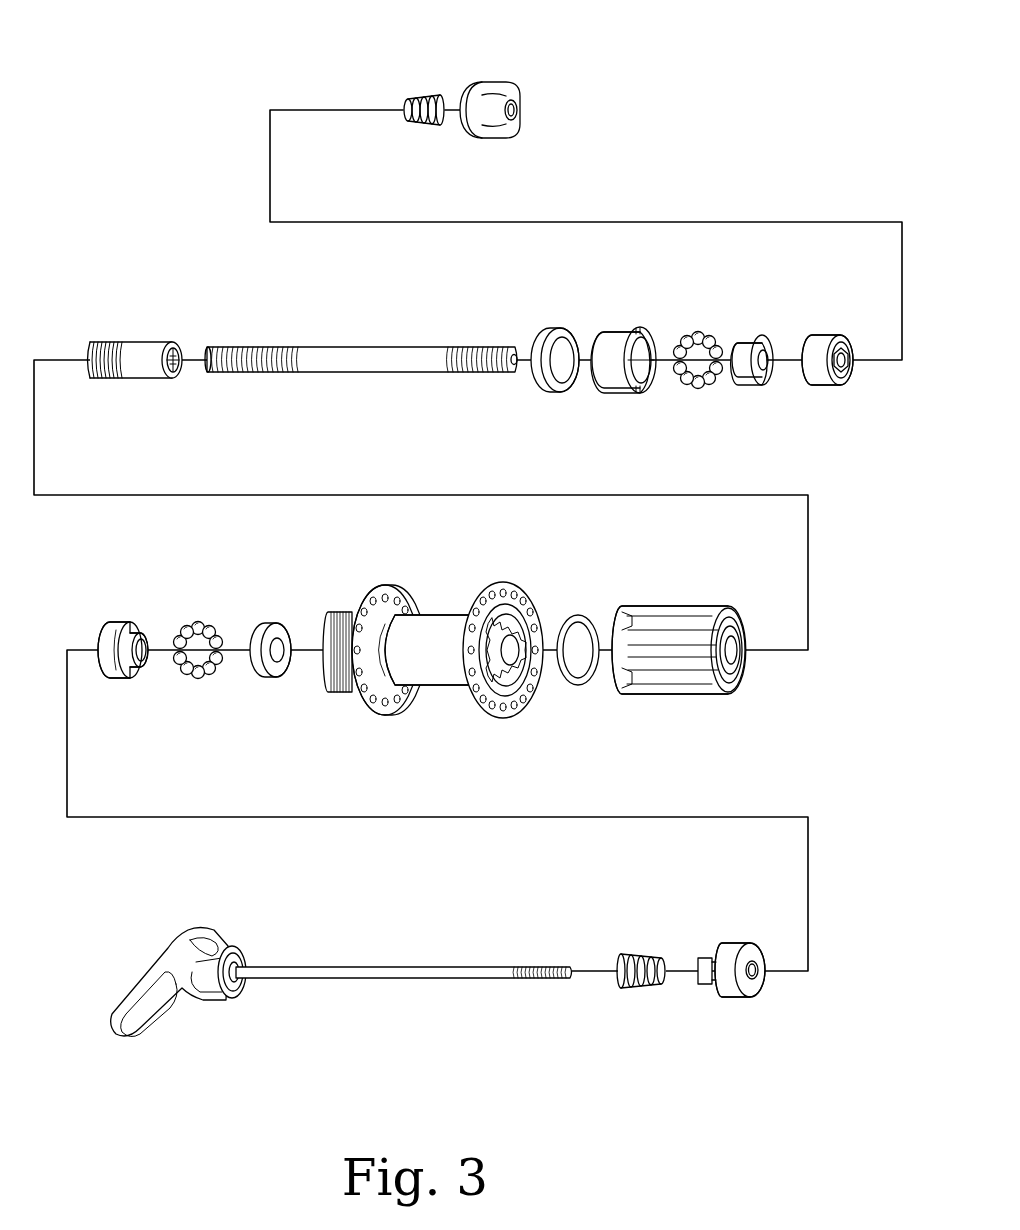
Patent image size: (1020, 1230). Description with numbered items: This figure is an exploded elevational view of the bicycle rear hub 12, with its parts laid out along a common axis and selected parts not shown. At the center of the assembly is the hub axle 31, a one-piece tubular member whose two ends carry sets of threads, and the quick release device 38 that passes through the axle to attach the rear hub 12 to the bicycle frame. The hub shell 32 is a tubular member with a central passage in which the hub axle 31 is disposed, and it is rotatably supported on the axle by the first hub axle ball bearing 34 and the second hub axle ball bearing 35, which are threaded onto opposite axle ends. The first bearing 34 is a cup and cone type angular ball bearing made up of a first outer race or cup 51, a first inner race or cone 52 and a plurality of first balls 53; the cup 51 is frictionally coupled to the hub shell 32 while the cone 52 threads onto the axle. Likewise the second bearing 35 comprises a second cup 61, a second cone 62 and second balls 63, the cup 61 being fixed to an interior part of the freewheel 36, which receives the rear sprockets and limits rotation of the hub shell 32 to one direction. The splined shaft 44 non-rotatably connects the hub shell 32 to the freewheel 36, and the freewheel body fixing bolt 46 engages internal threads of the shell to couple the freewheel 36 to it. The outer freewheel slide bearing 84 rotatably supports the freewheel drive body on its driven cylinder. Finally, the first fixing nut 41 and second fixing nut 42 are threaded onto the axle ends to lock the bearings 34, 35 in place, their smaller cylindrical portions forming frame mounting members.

The rear hub 12 is at (698, 138).
The hub axle 31 is at (383, 336).
The hub shell 32 is at (444, 598).
The first hub axle ball bearing 34 is at (87, 612).
The second hub axle ball bearing 35 is at (782, 310).
The freewheel 36 is at (706, 606).
The quick release device 38 is at (229, 1013).
The first fixing nut 41 is at (738, 993).
The second fixing nut 42 is at (816, 338).
The splined shaft 44 is at (510, 622).
The freewheel body fixing bolt 46 is at (147, 350).
The first outer race or cup 51 is at (250, 632).
The first inner race or cone 52 is at (136, 634).
The first rolling members or balls 53 is at (216, 633).
The second outer race or cup 61 is at (622, 336).
The second inner race or cone 62 is at (770, 338).
The second rolling members or balls 63 is at (703, 336).
The outer freewheel slide bearing 84 is at (562, 318).